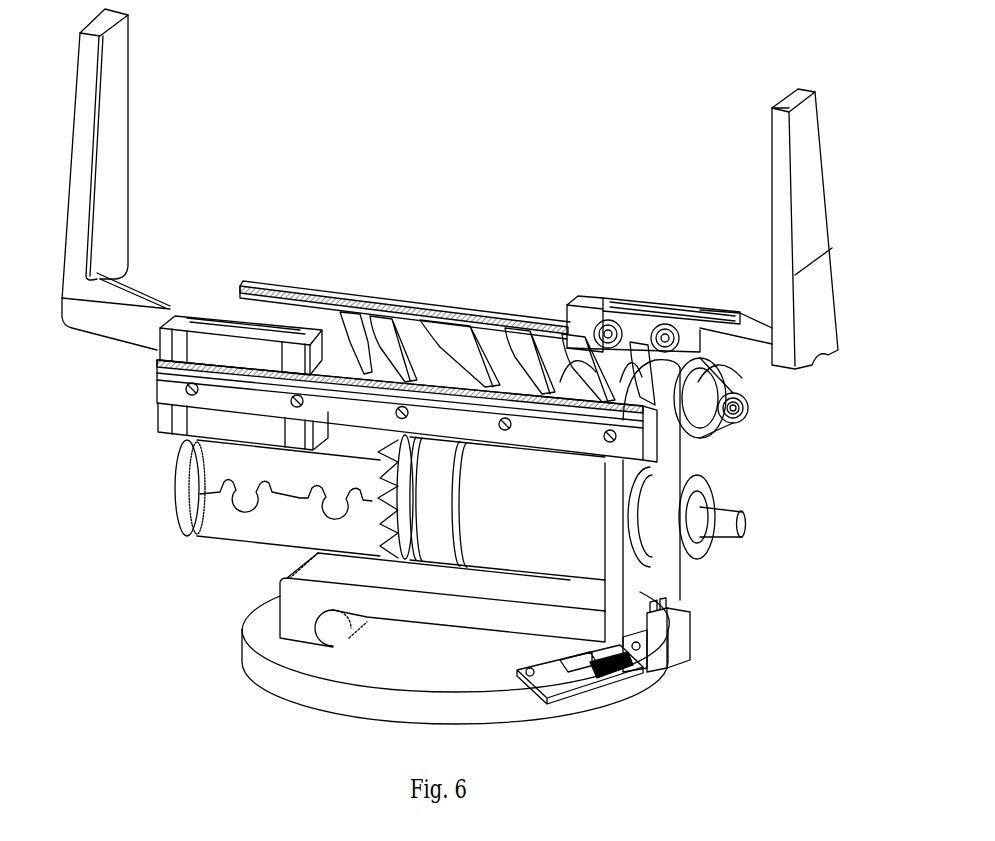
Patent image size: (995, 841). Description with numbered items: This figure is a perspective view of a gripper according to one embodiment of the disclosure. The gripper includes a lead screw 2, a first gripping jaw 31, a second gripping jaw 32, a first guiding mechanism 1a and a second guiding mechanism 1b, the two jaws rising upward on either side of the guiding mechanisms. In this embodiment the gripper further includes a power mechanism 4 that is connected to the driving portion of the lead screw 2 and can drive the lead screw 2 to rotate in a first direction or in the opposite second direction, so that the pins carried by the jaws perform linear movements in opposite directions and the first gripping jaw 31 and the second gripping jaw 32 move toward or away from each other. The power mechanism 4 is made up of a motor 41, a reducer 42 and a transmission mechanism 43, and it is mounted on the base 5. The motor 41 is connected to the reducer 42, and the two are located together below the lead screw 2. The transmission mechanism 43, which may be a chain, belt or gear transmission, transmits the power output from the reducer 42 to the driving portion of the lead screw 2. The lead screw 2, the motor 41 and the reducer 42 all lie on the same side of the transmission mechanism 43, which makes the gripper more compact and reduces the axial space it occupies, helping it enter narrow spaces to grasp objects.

The first gripping jaw 31 is at (142, 159).
The second gripping jaw 32 is at (755, 216).
The first guiding mechanism 1a is at (166, 398).
The second guiding mechanism 1b is at (299, 287).
The lead screw 2 is at (714, 385).
The power mechanism 4 is at (226, 575).
The motor 41 is at (208, 506).
The reducer 42 is at (531, 545).
The transmission mechanism 43 is at (669, 472).
The base 5 is at (271, 651).